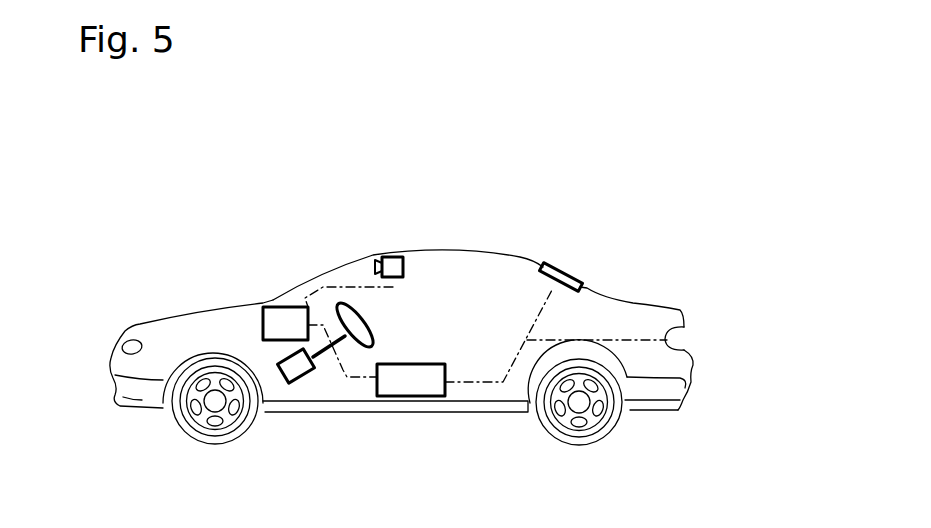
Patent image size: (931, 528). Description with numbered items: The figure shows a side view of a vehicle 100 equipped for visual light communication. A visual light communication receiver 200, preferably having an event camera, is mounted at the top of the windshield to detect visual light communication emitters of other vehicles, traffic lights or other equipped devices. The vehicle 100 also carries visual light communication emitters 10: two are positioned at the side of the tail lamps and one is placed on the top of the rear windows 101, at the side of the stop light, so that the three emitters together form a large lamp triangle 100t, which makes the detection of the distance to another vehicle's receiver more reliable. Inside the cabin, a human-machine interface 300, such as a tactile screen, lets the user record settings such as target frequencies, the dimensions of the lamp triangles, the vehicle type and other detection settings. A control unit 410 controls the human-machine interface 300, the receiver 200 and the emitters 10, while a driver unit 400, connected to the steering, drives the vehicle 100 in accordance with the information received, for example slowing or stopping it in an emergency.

The vehicle 100 is at (170, 278).
The large lamp triangle 100t is at (697, 217).
The rear windows 101 is at (660, 305).
The visual light communication emitter 10 is at (580, 265).
The visual light communication receiver 200 is at (392, 268).
The human-machine interface 300 is at (285, 315).
The driver unit 400 is at (295, 365).
The control unit 410 is at (435, 385).